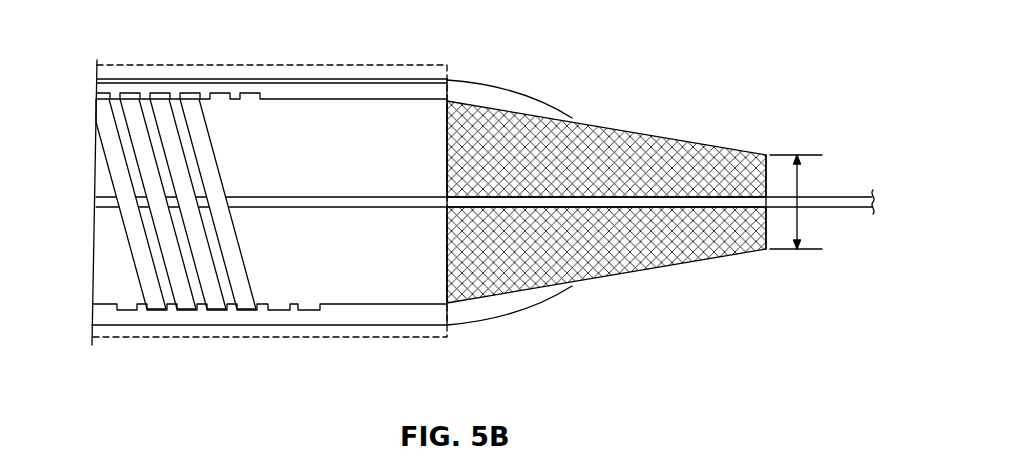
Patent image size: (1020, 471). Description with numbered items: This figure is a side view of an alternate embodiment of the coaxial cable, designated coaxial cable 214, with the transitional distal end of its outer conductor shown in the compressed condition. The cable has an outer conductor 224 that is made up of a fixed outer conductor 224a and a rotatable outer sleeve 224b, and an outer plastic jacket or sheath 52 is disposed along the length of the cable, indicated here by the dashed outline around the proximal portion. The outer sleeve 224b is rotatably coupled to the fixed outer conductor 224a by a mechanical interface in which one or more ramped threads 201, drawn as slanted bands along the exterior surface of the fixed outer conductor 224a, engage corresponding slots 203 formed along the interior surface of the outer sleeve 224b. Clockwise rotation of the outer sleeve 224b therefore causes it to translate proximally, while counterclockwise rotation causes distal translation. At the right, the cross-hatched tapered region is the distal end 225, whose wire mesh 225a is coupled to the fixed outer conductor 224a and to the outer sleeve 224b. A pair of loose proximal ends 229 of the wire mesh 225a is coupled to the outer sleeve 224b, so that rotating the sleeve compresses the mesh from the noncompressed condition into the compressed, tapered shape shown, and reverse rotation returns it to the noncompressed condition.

The outer plastic jacket or sheath 52 is at (440, 64).
The coaxial cable 214 is at (734, 94).
The ramped threads 201 is at (255, 272).
The slots 203 is at (238, 123).
The outer conductor 224 is at (122, 74).
The fixed outer conductor 224a is at (282, 98).
The rotatable outer sleeve 224b is at (150, 77).
The distal end 225 is at (605, 120).
The wire mesh 225a is at (734, 156).
The loose proximal ends 229 is at (488, 83).